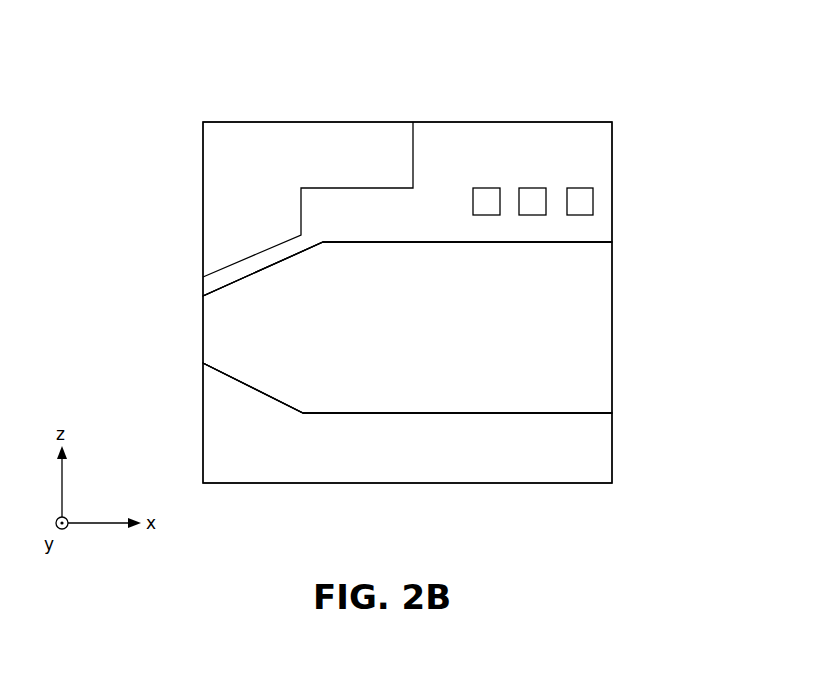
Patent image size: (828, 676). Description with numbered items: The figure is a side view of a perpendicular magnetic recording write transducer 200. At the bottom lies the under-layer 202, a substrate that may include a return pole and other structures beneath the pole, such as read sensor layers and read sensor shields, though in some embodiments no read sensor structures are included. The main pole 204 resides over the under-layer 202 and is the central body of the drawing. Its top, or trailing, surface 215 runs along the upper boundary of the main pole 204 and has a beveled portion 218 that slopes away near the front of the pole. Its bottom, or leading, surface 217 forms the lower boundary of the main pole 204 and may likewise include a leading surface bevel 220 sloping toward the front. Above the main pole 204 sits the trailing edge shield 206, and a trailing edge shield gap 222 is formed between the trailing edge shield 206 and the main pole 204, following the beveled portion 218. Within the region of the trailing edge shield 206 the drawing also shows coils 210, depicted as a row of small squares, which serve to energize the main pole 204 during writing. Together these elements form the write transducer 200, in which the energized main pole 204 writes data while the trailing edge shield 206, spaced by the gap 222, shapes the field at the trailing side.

The write transducer 200 is at (172, 116).
The under-layer 202 is at (233, 457).
The main pole 204 is at (445, 338).
The trailing edge shield 206 is at (255, 138).
The coils 210 is at (580, 203).
The top (trailing) surface 215 is at (357, 240).
The bottom (leading) surface 217 is at (345, 414).
The beveled portion 218 is at (268, 265).
The leading surface bevel 220 is at (245, 383).
The trailing edge shield gap 222 is at (213, 280).